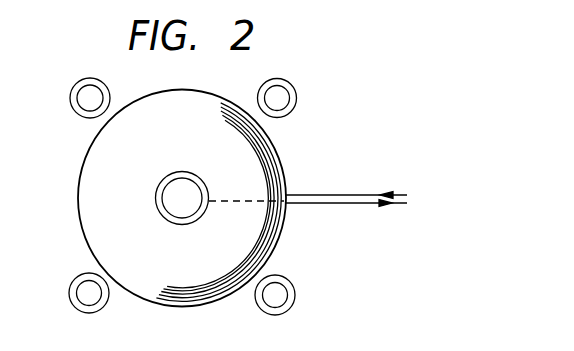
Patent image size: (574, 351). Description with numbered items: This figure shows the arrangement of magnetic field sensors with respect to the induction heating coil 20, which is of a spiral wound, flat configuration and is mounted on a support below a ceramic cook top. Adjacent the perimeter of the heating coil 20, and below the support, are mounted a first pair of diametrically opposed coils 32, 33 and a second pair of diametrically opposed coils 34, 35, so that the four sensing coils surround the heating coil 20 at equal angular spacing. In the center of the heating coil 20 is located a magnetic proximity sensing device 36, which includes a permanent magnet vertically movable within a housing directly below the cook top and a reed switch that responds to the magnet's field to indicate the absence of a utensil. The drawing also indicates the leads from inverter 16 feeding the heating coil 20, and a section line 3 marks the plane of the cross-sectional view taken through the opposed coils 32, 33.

The induction heating coil 20 is at (269, 158).
The magnetic proximity sensing device 36 is at (168, 197).
The coil 32 is at (96, 79).
The coil 33 is at (290, 295).
The coil 34 is at (289, 85).
The coil 35 is at (94, 310).
The section line 3- 3 is at (118, 132).
The inverter leads 16 is at (414, 201).